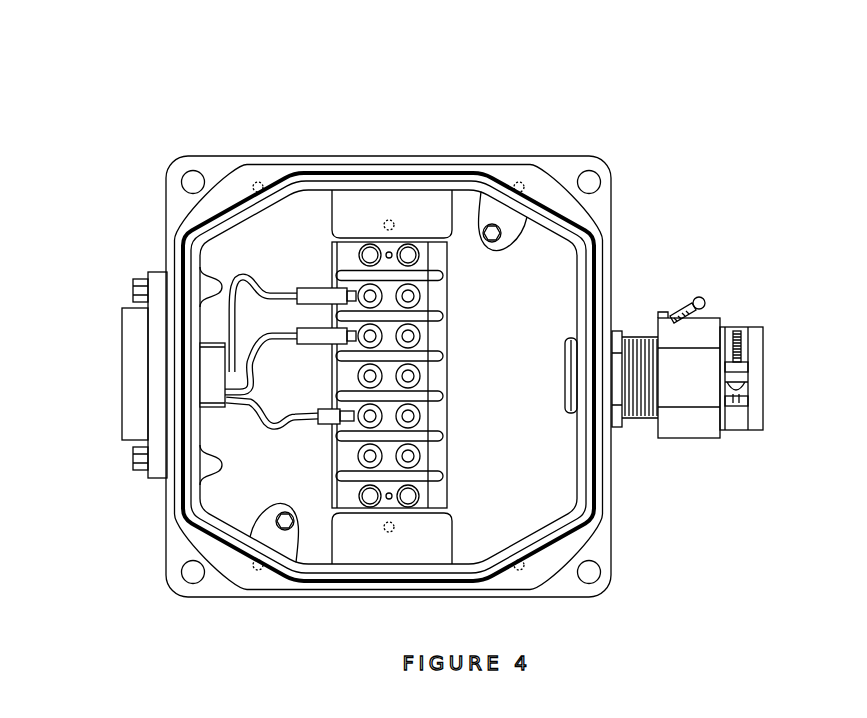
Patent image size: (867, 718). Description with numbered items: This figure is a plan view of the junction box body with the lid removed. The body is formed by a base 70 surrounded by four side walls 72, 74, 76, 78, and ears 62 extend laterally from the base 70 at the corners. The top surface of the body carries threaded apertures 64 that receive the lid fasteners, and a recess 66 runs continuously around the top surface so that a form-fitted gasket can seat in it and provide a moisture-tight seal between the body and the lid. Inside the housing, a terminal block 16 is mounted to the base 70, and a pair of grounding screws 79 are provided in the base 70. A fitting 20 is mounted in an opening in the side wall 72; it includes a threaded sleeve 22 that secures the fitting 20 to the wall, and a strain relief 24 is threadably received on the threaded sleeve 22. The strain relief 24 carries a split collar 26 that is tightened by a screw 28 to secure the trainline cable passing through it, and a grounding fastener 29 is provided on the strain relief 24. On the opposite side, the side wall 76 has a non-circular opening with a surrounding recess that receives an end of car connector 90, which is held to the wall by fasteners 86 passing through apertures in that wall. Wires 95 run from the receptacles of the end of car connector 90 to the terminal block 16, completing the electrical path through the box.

The terminal block 16 is at (437, 252).
The fitting 20 is at (759, 378).
The threaded sleeve 22 is at (622, 332).
The strain relief 24 is at (708, 440).
The split collar 26 is at (750, 370).
The screw 28 is at (737, 335).
The grounding fastener 29 is at (700, 293).
The ears 62 is at (176, 553).
The threaded apertures 64 is at (258, 181).
The recess 66 is at (400, 173).
The base 70 is at (528, 277).
The side wall 72 is at (621, 479).
The side wall 74 is at (380, 601).
The side wall 76 is at (168, 250).
The side wall 78 is at (508, 157).
The grounding screws 79 is at (490, 250).
The fasteners 86 is at (131, 291).
The end of car connector 90 is at (108, 394).
The wires 95 is at (278, 275).